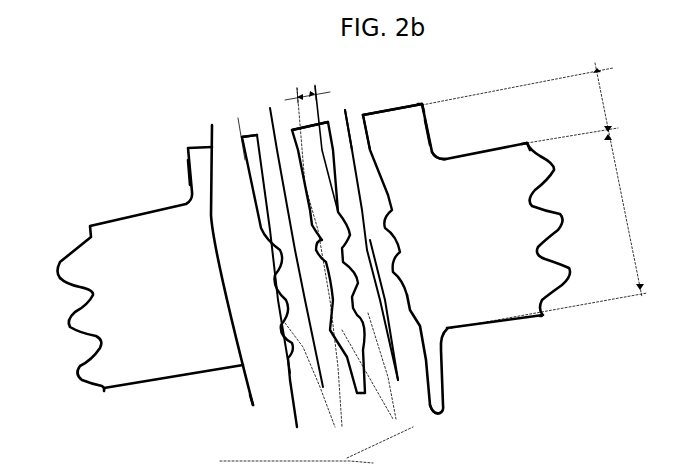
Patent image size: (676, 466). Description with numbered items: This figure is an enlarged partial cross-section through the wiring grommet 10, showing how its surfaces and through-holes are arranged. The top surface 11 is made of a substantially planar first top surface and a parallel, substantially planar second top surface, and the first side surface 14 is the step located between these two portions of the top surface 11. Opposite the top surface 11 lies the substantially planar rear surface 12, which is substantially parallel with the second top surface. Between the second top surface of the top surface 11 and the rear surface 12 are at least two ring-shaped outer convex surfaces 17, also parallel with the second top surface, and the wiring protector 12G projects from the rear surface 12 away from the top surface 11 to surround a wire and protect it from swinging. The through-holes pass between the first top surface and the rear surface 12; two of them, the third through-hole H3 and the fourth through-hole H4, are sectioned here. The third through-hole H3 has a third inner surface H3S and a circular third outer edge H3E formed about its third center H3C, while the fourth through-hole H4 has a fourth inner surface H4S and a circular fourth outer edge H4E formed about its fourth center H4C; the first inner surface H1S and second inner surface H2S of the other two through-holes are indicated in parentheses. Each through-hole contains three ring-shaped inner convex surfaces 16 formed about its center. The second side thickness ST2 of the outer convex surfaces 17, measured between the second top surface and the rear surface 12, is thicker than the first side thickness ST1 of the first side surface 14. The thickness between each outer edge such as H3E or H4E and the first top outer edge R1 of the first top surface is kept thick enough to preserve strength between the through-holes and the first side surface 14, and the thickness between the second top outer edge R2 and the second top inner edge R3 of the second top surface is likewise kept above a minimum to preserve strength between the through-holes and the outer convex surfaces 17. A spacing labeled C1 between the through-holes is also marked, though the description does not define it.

The wiring grommet 10 is at (494, 76).
The top surface 11 is at (190, 145).
The rear surface 12 is at (165, 386).
The wiring protector 12G is at (290, 380).
The first side surface 14 is at (188, 170).
The inner convex surfaces 16 is at (316, 224).
The outer convex surface 17 is at (58, 276).
The third through-hole H3 is at (247, 134).
The third center H3C is at (270, 108).
The third outer edge H3E is at (238, 118).
The third inner surface H3S is at (320, 384).
The fourth through-hole H4 is at (328, 121).
The fourth center H4C is at (346, 107).
The fourth outer edge H4E is at (363, 113).
The fourth inner surface H4S is at (375, 373).
The first inner surface H1S is at (296, 456).
The second inner surface H2S is at (339, 442).
The clearance C1 is at (313, 253).
The first top outer edge R1 is at (423, 103).
The second top outer edge R2 is at (529, 142).
The second top inner edge R3 is at (440, 157).
The first side thickness ST1 is at (527, 103).
The second side thickness ST2 is at (552, 231).